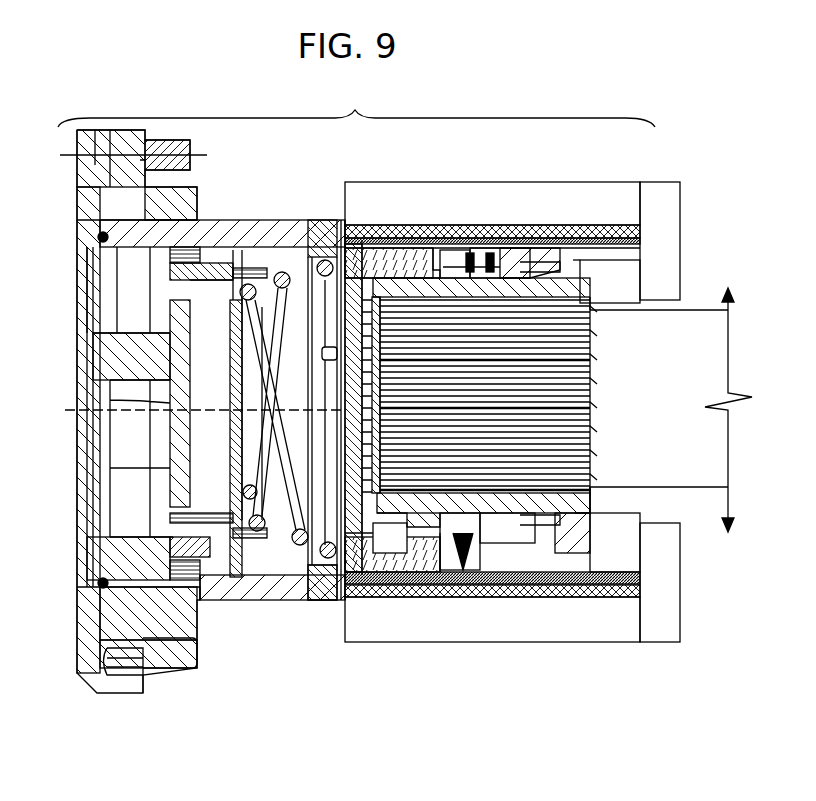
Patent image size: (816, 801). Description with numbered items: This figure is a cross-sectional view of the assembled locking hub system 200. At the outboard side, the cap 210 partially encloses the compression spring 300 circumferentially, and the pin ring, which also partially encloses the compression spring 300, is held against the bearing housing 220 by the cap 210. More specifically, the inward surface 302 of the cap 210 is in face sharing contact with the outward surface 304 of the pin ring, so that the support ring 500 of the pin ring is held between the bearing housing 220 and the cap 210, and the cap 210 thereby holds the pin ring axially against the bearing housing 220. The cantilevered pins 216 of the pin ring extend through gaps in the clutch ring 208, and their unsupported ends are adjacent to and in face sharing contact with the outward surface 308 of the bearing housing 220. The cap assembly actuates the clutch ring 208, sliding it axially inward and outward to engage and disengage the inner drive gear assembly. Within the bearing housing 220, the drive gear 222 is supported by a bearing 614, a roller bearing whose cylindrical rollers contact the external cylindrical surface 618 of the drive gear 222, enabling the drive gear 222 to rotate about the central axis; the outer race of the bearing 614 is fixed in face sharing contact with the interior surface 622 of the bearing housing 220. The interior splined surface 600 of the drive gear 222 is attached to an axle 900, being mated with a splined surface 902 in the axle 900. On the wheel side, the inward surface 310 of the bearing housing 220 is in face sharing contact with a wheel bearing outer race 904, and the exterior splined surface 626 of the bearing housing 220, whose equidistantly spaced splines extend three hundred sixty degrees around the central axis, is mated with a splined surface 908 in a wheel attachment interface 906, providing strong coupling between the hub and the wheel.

The locking hub system 200 is at (356, 108).
The cap 210 is at (113, 680).
The cantilevered pins 216 is at (410, 240).
The inward surface 302 is at (300, 245).
The outward surface 304 is at (318, 235).
The compression spring 300 is at (265, 550).
The support ring 500 is at (318, 600).
The clutch ring 208 is at (337, 600).
The wheel attachment interface 906 is at (492, 412).
The splined surface 908 is at (388, 232).
The wheel bearing outer race 904 is at (665, 225).
The outward surface 308 is at (423, 250).
The external cylindrical surface 618 is at (466, 258).
The bearing housing 220 is at (520, 245).
The interior surface 622 is at (540, 255).
The exterior splined surface 626 is at (551, 252).
The bearing 614 is at (590, 295).
The inward surface 310 is at (630, 258).
The interior splined surface 600 is at (575, 365).
The splined surface 902 is at (597, 310).
The axle 900 is at (700, 305).
The drive gear 222 is at (588, 496).